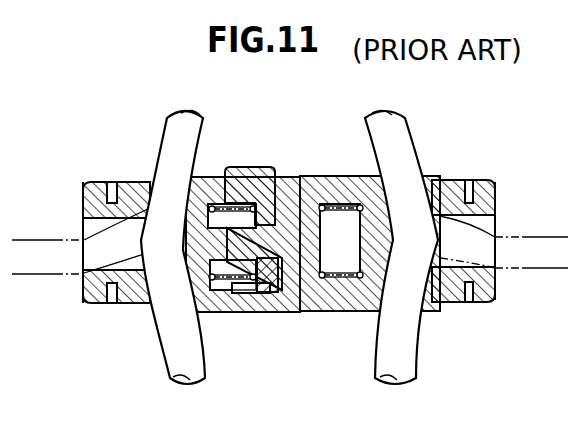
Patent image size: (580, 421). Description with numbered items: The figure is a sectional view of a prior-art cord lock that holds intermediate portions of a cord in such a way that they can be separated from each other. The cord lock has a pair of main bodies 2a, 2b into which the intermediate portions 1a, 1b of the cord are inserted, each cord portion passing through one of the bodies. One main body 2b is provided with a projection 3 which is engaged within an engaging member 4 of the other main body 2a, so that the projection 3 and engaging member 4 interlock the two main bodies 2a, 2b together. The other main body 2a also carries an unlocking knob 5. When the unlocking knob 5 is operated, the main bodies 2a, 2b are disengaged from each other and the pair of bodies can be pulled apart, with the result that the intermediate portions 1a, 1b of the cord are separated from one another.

The intermediate portion of the cord 1a is at (172, 142).
The intermediate portion of the cord 1b is at (402, 138).
The main body 2a is at (206, 178).
The main body 2b is at (337, 176).
The projection 3 is at (247, 257).
The engaging member 4 is at (265, 284).
The unlocking knob 5 is at (258, 167).